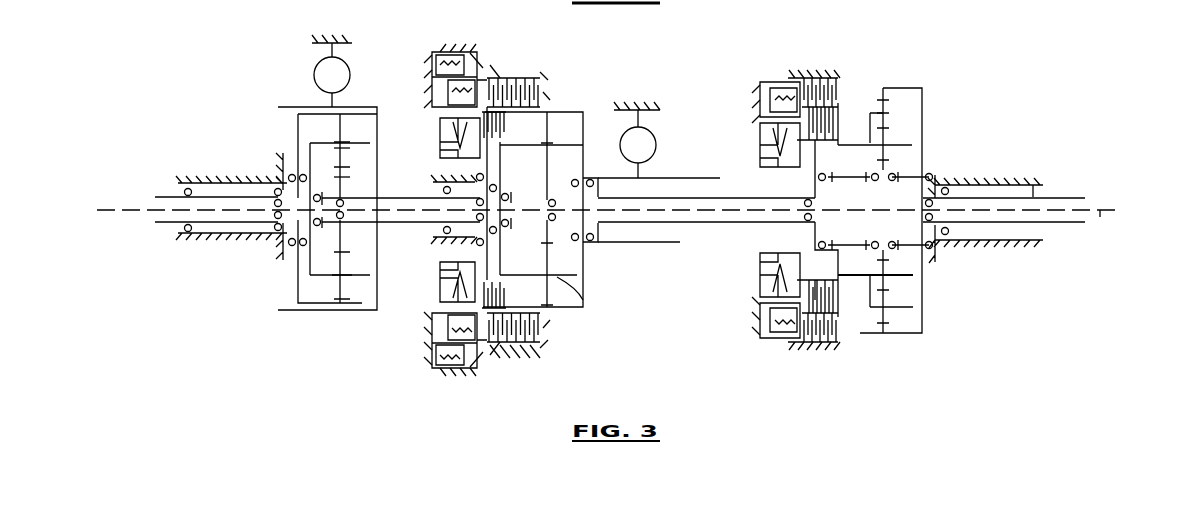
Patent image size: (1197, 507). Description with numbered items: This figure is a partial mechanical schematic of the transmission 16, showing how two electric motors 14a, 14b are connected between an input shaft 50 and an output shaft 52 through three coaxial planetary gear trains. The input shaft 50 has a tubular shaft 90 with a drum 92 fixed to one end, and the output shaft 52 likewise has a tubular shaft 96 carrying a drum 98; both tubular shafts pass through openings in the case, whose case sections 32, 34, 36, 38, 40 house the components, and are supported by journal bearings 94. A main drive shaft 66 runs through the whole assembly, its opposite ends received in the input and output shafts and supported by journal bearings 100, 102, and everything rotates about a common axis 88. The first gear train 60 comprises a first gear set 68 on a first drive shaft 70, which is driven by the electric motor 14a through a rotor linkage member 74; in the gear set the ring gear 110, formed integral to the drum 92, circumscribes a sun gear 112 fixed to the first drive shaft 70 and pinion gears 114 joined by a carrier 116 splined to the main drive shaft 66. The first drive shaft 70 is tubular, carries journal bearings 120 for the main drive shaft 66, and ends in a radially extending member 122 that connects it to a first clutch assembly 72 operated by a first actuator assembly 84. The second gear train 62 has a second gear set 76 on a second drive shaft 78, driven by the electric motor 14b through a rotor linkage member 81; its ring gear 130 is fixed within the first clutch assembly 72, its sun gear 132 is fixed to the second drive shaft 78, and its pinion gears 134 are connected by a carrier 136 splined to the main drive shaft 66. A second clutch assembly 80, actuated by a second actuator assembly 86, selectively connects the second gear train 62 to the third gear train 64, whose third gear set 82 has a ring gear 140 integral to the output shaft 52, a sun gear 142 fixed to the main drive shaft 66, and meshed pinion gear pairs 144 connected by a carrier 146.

The transmission 16 is at (222, 33).
The case section 32 is at (257, 183).
The case section 34 is at (328, 40).
The case section 36 is at (458, 52).
The case section 38 is at (518, 80).
The case section 40 is at (963, 172).
The input shaft 50 is at (167, 197).
The output shaft 52 is at (1075, 198).
The first gear train 60 is at (315, 187).
The second gear train 62 is at (524, 188).
The third gear train 64 is at (853, 206).
The main drive shaft 66 is at (743, 210).
The first gear set 68 is at (298, 150).
The first drive shaft 70 is at (383, 228).
The first clutch assembly 72 is at (502, 67).
The rotor linkage member 74 is at (353, 107).
The second gear set 76 is at (570, 275).
The second drive shaft 78 is at (697, 228).
The second clutch assembly 80 is at (838, 65).
The rotor linkage member 81 is at (667, 175).
The third gear set 82 is at (900, 307).
The first actuator assembly 84 is at (475, 33).
The second actuator assembly 86 is at (755, 62).
The axis 88 is at (1107, 220).
The tubular shaft 90 is at (205, 183).
The drum 92 is at (298, 122).
The journal bearings 94 is at (290, 225).
The tubular shaft 96 is at (1033, 185).
The drum 98 is at (927, 100).
The journal bearings 100 is at (288, 233).
The journal bearings 102 is at (932, 221).
The ring gear 110 is at (343, 117).
The sun gear 112 is at (343, 177).
The pinion gears 114 is at (343, 150).
The carrier 116 is at (357, 280).
The journal bearings 120 is at (338, 220).
The radially extending member 122 is at (500, 170).
The ring gear 130 is at (550, 115).
The sun gear 132 is at (560, 173).
The pinion gears 134 is at (552, 147).
The carrier 136 is at (583, 302).
The ring gear 140 is at (882, 90).
The sun gear 142 is at (882, 192).
The meshed pinion gear pairs 144 is at (888, 122).
The carrier 146 is at (852, 275).
The electric motor 14a is at (352, 77).
The electric motor 14b is at (658, 143).